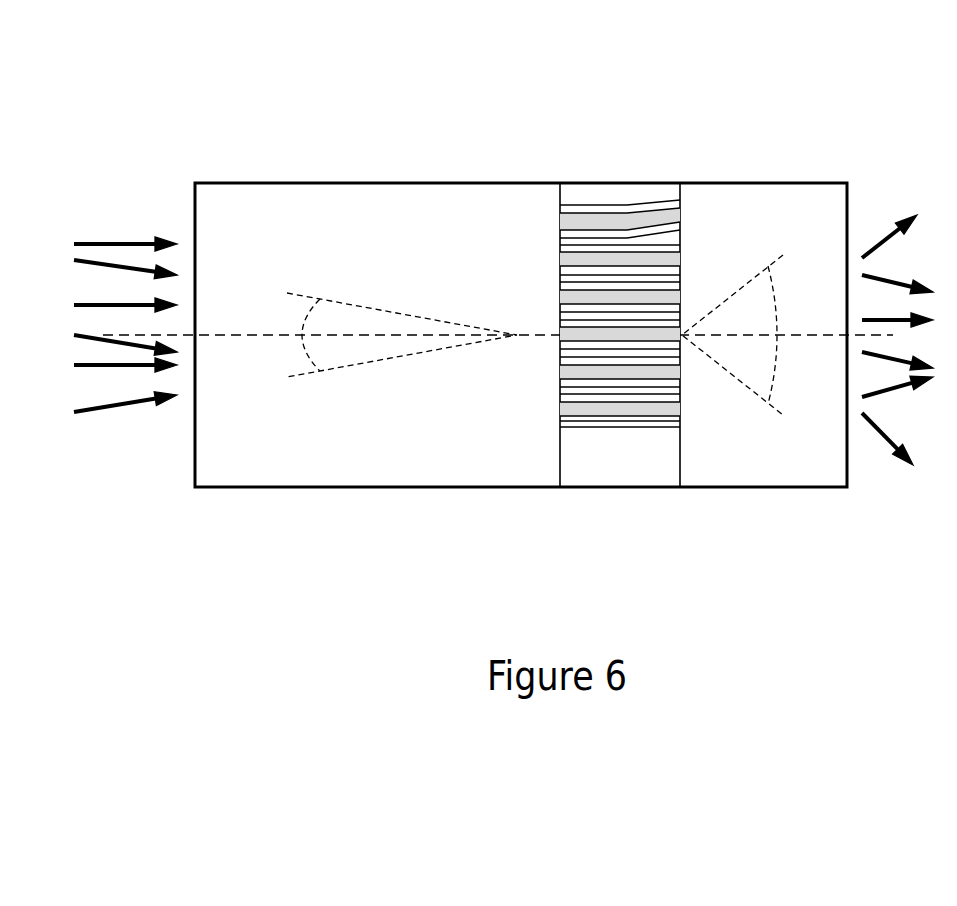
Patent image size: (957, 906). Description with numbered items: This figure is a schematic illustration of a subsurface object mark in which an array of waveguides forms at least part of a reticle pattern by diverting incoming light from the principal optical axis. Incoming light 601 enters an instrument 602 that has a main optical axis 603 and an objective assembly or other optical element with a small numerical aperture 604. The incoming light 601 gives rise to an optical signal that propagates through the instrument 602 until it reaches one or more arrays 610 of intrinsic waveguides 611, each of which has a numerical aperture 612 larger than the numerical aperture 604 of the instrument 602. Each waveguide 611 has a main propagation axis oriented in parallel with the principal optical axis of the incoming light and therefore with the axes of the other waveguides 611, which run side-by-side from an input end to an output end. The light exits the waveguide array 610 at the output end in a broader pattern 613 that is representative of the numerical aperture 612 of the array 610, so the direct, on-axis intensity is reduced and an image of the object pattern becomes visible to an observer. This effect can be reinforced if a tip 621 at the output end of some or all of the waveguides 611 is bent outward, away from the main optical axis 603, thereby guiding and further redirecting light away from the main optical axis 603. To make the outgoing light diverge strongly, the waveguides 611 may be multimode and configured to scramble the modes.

The incoming light 601 is at (97, 203).
The instrument 602 is at (318, 158).
The main optical axis 603 is at (258, 336).
The numerical aperture 604 is at (378, 308).
The array of intrinsic waveguides 610 is at (597, 308).
The intrinsic waveguide 611 is at (586, 212).
The numerical aperture 612 is at (740, 377).
The broader pattern 613 is at (890, 202).
The tip 621 is at (655, 200).